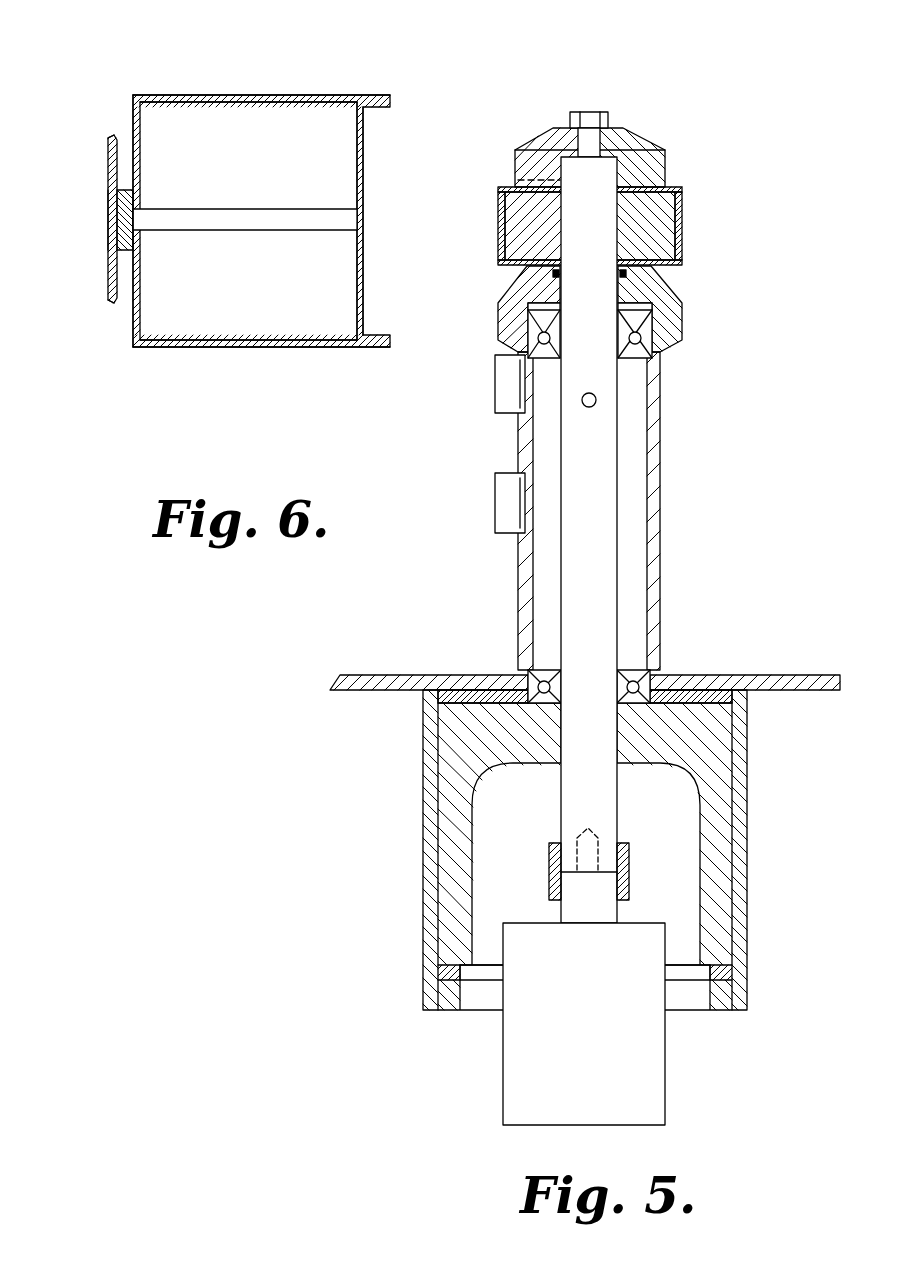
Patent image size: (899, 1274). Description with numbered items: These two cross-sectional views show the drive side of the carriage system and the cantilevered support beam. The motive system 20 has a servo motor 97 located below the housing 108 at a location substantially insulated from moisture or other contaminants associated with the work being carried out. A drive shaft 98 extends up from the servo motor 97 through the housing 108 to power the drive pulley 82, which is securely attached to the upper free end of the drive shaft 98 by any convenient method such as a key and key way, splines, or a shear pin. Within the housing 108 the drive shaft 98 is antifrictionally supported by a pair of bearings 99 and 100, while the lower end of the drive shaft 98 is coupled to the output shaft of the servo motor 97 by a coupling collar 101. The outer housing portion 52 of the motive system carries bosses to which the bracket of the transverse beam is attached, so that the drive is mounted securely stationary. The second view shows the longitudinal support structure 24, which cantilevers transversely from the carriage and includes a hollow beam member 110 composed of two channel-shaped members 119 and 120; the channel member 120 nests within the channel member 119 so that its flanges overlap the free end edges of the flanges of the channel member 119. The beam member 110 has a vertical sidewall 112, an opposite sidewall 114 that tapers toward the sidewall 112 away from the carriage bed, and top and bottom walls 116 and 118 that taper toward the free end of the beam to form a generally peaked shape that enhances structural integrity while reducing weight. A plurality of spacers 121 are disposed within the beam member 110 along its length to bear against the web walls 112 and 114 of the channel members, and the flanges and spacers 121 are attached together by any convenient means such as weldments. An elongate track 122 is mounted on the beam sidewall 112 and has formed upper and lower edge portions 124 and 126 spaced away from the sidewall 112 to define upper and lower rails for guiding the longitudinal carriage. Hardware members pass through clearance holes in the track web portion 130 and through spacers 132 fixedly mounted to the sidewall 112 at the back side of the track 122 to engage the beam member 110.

In FIG. 5, the motive system 20 is at (720, 450).
In FIG. 5, the outer housing portion 52 is at (661, 528).
In FIG. 5, the drive pulley 82 is at (683, 215).
In FIG. 5, the servo motor 97 is at (650, 1100).
In FIG. 5, the drive shaft 98 is at (578, 642).
In FIG. 5, the bearing 99 is at (661, 343).
In FIG. 5, the bearing 100 is at (632, 706).
In FIG. 5, the coupling collar 101 is at (620, 880).
In FIG. 5, the housing 108 is at (688, 648).
In FIG. 6, the longitudinal support structure 24 is at (366, 76).
In FIG. 6, the beam member 110 is at (240, 94).
In FIG. 6, the vertical sidewall 112 is at (135, 112).
In FIG. 6, the opposite sidewall 114 is at (365, 172).
In FIG. 6, the top wall 116 is at (279, 94).
In FIG. 6, the bottom wall 118 is at (256, 348).
In FIG. 6, the channel-shaped member 119 is at (125, 329).
In FIG. 6, the channel-shaped member 120 is at (372, 300).
In FIG. 6, the spacer 121 is at (338, 233).
In FIG. 6, the elongate track 122 is at (108, 145).
In FIG. 6, the upper edge portion 124 is at (110, 135).
In FIG. 6, the lower edge portion 126 is at (110, 304).
In FIG. 6, the track web portion 130 is at (108, 241).
In FIG. 6, the spacer 132 is at (118, 206).